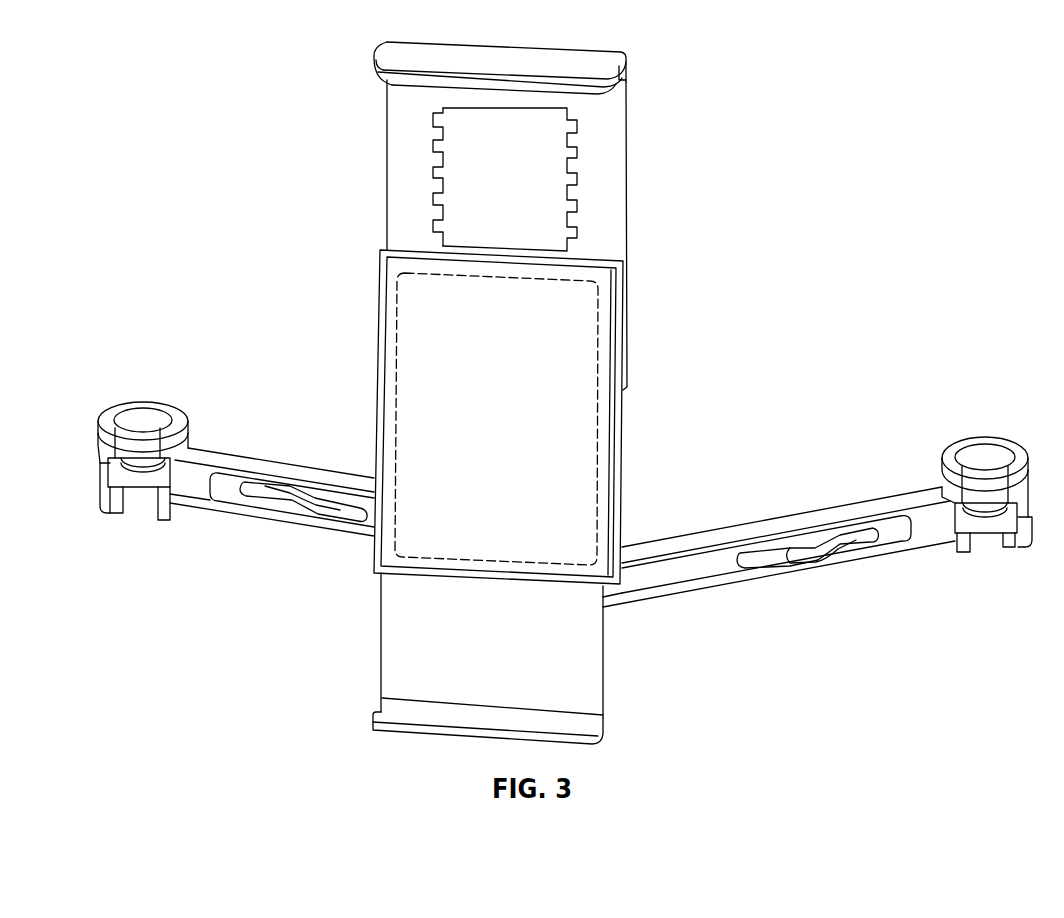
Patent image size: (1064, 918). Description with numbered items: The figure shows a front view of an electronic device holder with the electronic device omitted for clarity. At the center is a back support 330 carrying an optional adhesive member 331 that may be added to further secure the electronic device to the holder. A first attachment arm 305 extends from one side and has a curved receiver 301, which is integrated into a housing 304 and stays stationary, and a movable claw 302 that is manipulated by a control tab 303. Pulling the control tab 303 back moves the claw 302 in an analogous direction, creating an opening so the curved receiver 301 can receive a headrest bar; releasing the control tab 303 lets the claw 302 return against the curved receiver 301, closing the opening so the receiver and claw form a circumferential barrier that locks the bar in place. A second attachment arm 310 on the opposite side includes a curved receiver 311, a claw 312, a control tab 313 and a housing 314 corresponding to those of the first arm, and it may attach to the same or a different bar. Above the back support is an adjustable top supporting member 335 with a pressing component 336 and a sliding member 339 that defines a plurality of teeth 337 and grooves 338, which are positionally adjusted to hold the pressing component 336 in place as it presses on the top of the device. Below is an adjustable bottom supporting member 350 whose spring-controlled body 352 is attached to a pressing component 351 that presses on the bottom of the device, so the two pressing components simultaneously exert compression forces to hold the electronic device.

The curved receiver 301 is at (997, 442).
The claw 302 is at (987, 527).
The control tab 303 is at (797, 560).
The housing 304 is at (683, 543).
The first attachment arm 305 is at (873, 497).
The second attachment arm 310 is at (237, 443).
The curved receiver 311 is at (110, 418).
The claw 312 is at (147, 483).
The control tab 313 is at (307, 512).
The housing 314 is at (337, 478).
The back support 330 is at (603, 447).
The adhesive member 331 is at (557, 343).
The top supporting member 335 is at (627, 53).
The pressing component 336 is at (388, 55).
The teeth 337 is at (443, 127).
The grooves 338 is at (438, 147).
The sliding member 339 is at (623, 228).
The bottom supporting member 350 is at (593, 700).
The pressing component 351 is at (413, 715).
The spring-controlled body 352 is at (593, 628).